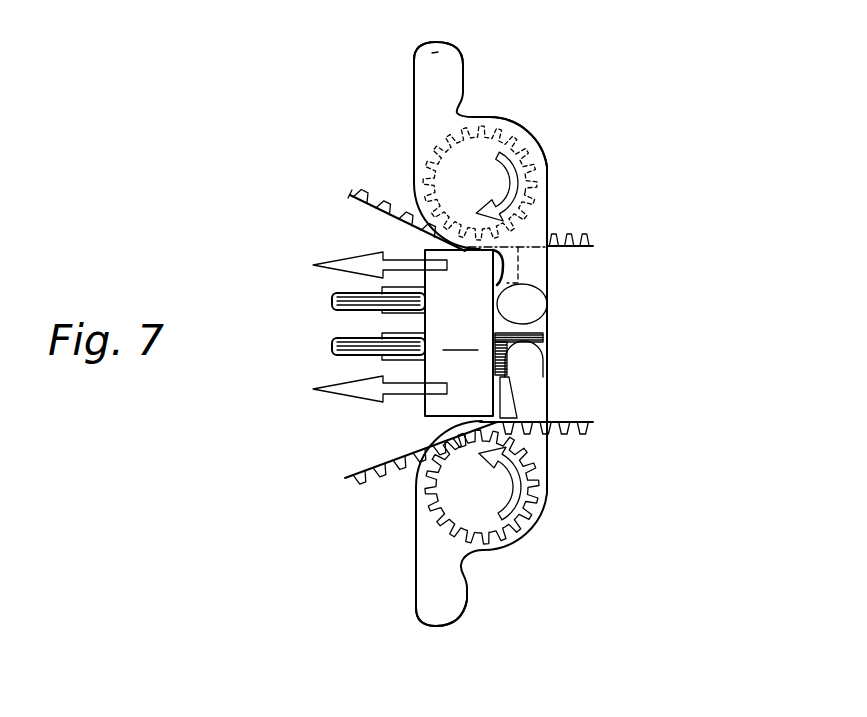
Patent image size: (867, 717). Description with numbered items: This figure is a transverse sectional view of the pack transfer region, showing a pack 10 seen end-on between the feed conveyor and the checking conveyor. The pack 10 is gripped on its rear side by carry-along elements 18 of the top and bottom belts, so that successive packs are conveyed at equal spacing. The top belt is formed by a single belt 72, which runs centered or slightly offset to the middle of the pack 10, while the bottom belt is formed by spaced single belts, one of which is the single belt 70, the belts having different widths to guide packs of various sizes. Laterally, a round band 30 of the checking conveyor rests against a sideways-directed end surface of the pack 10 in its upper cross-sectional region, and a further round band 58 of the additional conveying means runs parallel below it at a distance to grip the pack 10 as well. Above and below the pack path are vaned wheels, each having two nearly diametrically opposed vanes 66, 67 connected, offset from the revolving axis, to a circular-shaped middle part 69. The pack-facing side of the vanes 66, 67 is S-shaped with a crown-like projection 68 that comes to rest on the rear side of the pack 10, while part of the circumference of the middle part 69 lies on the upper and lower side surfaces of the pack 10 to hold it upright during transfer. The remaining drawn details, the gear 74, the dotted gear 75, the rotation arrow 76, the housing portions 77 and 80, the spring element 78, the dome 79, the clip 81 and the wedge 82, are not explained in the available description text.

The pack 10 is at (403, 333).
The carry-along elements 18 is at (510, 275).
The round band 30 is at (333, 302).
The round band 58 is at (340, 355).
The vane 66 is at (467, 78).
The vane 67 is at (435, 53).
The crown-like projection 68 is at (530, 302).
The circular-shaped middle part 69 is at (533, 170).
The single belt 70 is at (360, 483).
The single belt 72 is at (350, 193).
The drive gear 74 is at (467, 530).
The upper gear 75 is at (507, 193).
The rotation direction 76 is at (520, 497).
The housing portion 77 is at (432, 53).
The spring element 78 is at (535, 318).
The guide dome 79 is at (545, 360).
The housing bottom 80 is at (447, 610).
The clip 81 is at (503, 290).
The wedge 82 is at (512, 378).